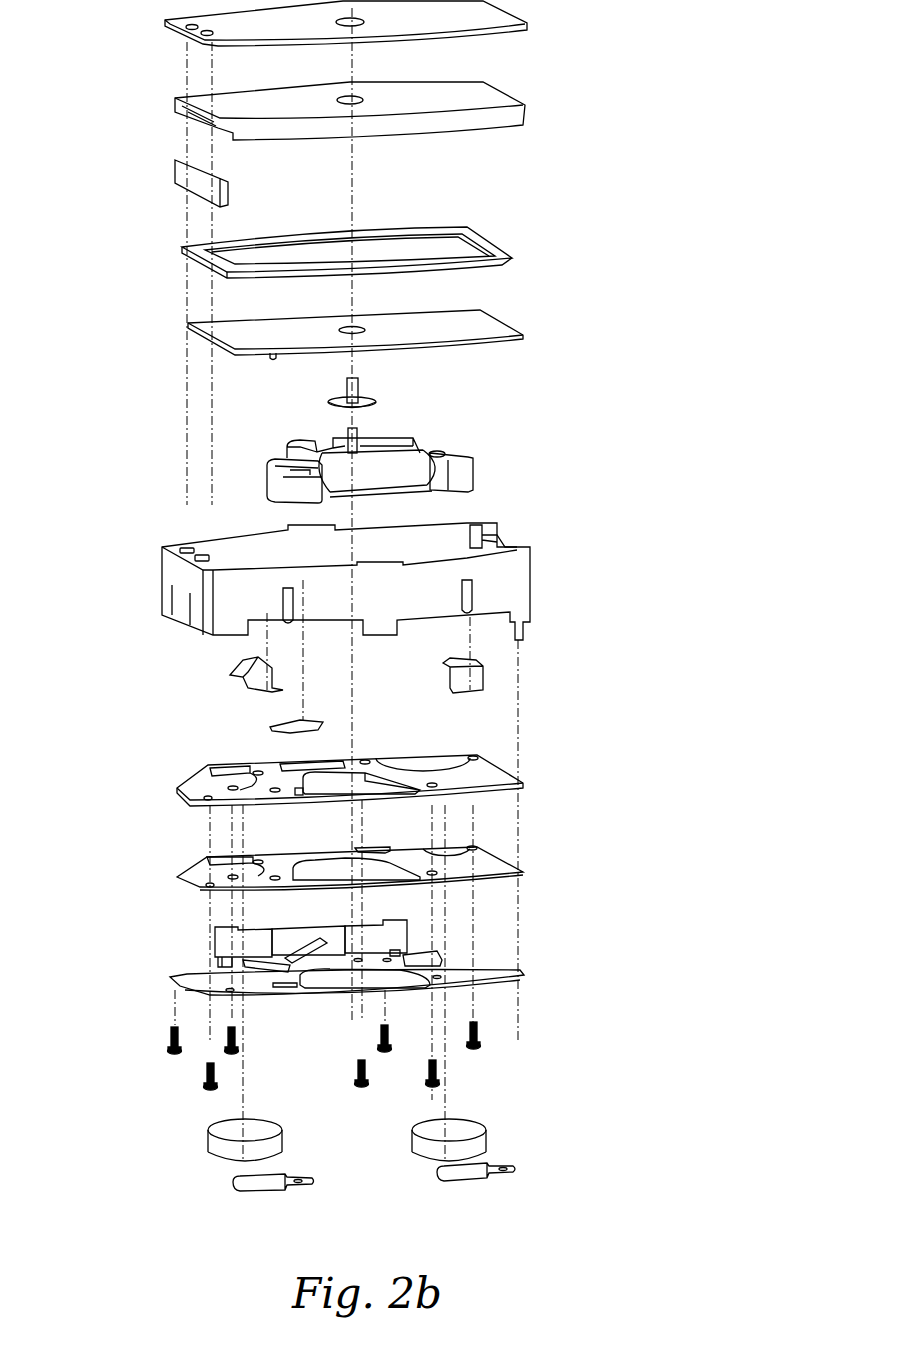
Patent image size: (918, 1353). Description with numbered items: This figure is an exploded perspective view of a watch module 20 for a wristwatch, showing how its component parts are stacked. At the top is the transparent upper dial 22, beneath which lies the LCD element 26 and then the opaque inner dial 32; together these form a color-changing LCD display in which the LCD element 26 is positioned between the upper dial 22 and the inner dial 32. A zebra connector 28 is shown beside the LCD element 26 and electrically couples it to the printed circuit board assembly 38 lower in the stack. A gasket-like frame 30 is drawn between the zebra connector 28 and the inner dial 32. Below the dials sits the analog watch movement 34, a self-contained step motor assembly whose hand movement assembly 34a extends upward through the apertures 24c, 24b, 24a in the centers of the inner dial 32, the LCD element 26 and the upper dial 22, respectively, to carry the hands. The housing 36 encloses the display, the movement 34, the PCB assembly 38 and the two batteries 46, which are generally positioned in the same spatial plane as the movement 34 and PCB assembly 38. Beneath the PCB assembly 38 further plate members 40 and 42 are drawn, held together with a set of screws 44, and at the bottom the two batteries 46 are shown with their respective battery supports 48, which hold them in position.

The watch module 20 is at (588, 221).
The transparent upper dial 22 is at (180, 33).
The aperture 24a is at (368, 23).
The aperture 24b is at (368, 100).
The aperture 24c is at (368, 330).
The LCD element 26 is at (175, 112).
The zebra connector 28 is at (178, 183).
The gasket 30 is at (182, 259).
The opaque inner dial 32 is at (190, 338).
The analog watch movement 34 is at (272, 482).
The hand movement assembly 34a is at (335, 392).
The housing 36 is at (150, 585).
The printed circuit board assembly 38 is at (178, 792).
The second plate 40 is at (175, 880).
The circuit board assembly 42 is at (178, 985).
The screws 44 is at (472, 1048).
The batteries 46 is at (570, 1131).
The battery supports 48 is at (463, 1175).